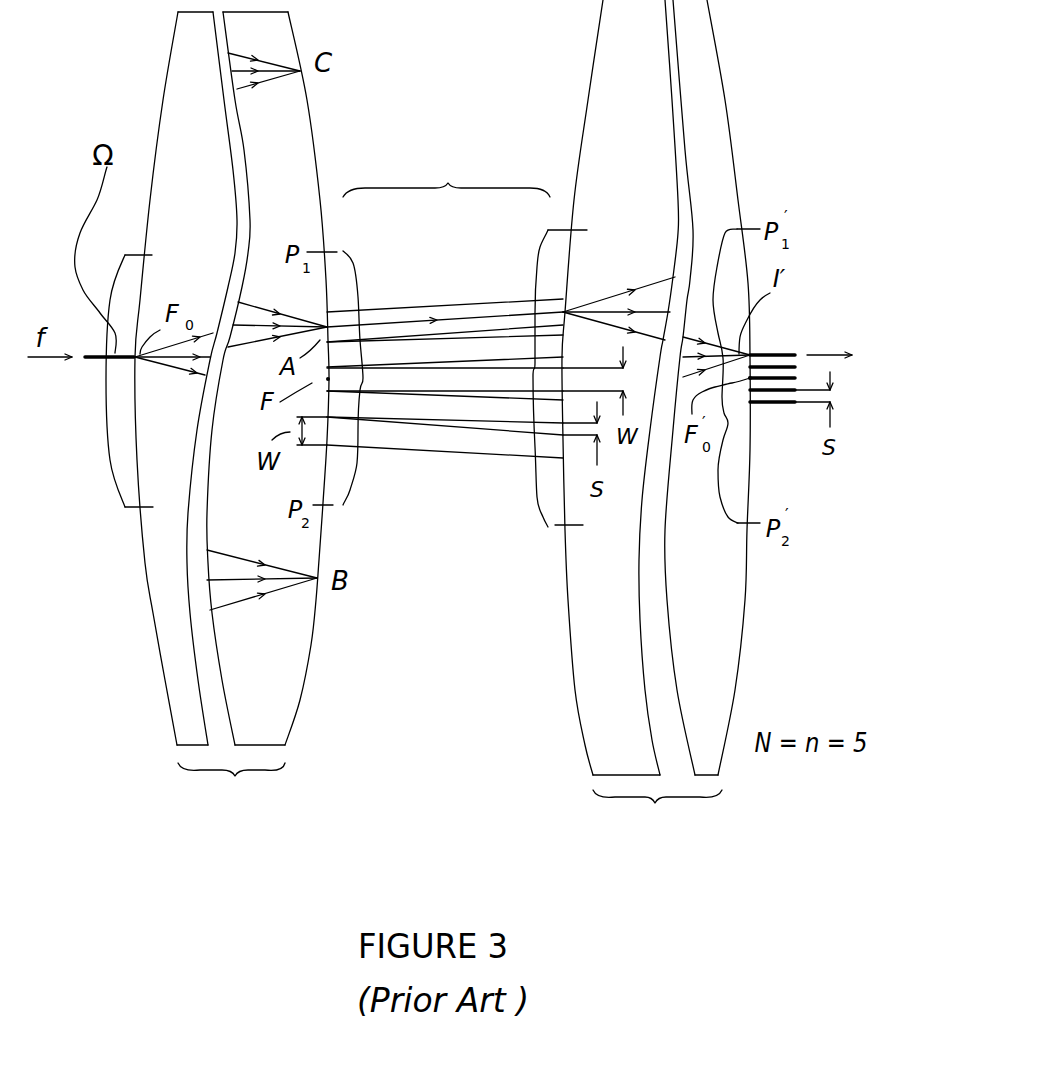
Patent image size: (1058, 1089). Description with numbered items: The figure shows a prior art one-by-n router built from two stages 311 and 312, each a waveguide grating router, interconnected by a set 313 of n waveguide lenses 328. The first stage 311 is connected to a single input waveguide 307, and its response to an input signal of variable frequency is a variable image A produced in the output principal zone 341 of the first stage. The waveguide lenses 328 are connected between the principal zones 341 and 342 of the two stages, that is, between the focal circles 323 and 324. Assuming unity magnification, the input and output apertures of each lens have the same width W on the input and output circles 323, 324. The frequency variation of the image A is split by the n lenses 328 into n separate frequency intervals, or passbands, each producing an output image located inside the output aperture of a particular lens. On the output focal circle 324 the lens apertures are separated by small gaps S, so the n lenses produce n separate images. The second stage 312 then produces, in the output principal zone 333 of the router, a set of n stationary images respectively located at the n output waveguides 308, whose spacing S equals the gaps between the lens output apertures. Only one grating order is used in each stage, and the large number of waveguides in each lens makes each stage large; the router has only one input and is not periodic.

The input waveguide 307 is at (97, 360).
The output waveguides 308 is at (788, 353).
The first stage 311 is at (262, 427).
The second stage 312 is at (620, 432).
The set of waveguide lenses 313 is at (447, 151).
The input focal circle 323 is at (312, 645).
The output focal circle 324 is at (570, 648).
The waveguide lens 328 is at (385, 310).
The output principal zone 333 is at (722, 412).
The output principal zone of the first stage 341 is at (363, 378).
The principal zone of the second stage 342 is at (533, 377).